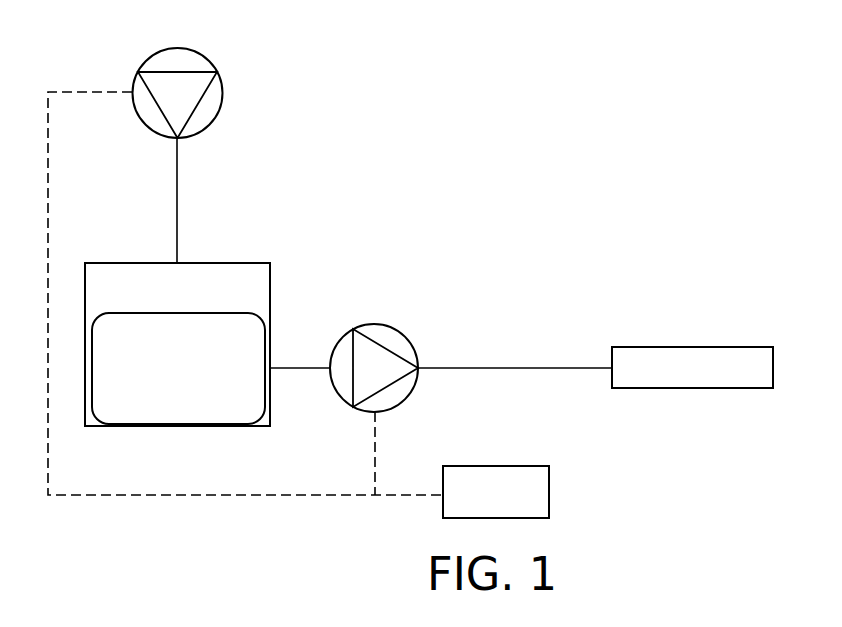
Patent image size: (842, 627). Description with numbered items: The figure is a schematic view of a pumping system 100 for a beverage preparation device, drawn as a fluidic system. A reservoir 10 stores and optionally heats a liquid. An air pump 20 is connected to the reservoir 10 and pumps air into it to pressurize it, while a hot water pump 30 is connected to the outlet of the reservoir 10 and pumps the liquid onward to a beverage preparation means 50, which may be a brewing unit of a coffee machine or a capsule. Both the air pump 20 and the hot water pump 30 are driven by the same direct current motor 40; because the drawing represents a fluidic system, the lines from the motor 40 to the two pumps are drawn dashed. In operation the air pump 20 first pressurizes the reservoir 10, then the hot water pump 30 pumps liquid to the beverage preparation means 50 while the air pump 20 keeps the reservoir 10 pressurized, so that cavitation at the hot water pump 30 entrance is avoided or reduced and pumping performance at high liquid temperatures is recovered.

The pumping system 100 is at (503, 212).
The reservoir 10 is at (131, 263).
The air pump 20 is at (147, 60).
The hot water pump 30 is at (386, 323).
The direct current motor 40 is at (498, 466).
The beverage preparation means 50 is at (695, 347).